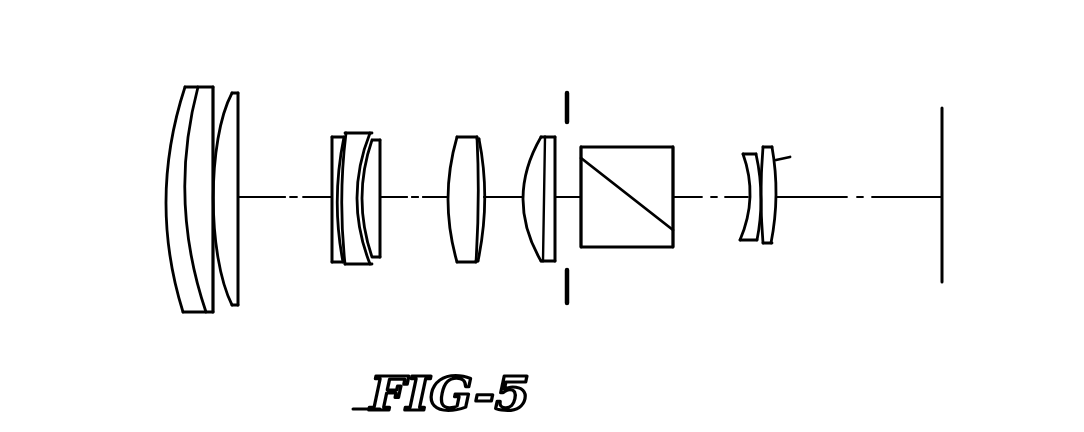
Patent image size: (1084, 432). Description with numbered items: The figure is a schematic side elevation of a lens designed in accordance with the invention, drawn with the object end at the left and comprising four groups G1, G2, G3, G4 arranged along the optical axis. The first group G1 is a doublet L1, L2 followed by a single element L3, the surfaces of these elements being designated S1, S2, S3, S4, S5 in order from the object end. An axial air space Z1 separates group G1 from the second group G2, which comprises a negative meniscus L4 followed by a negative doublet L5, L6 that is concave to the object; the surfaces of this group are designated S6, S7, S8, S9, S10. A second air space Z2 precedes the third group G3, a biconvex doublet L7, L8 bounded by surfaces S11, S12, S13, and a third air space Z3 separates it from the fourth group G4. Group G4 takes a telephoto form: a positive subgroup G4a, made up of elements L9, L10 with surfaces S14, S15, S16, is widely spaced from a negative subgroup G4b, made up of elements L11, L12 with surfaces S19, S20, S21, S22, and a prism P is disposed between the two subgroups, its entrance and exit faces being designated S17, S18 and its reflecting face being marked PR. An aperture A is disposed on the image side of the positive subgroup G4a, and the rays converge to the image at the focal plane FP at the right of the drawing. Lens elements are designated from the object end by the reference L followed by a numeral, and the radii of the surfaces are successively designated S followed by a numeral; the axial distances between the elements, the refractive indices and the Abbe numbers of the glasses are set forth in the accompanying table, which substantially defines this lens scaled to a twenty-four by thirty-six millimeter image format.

The first lens group G1 is at (275, 38).
The second lens group G2 is at (397, 62).
The third lens group G3 is at (513, 62).
The fourth lens group G4 is at (762, 60).
The positive subgroup G4a is at (573, 181).
The negative subgroup G4b is at (766, 114).
The lens element L1 is at (173, 215).
The lens element L2 is at (222, 197).
The lens element L3 is at (245, 187).
The negative meniscus L4 is at (329, 202).
The lens element L5 is at (377, 209).
The lens element L6 is at (395, 202).
The lens element L7 is at (466, 194).
The lens element L8 is at (502, 190).
The lens element L9 is at (526, 208).
The lens element L10 is at (587, 194).
The lens element L11 is at (746, 201).
The lens element L12 is at (796, 187).
The lens surface S1 is at (180, 110).
The lens surface S2 is at (199, 93).
The lens surface S3 is at (226, 96).
The lens surface S4 is at (222, 117).
The lens surface S5 is at (238, 158).
The lens surface S6 is at (330, 152).
The lens surface S7 is at (345, 134).
The lens surface S8 is at (356, 140).
The lens surface S9 is at (374, 148).
The lens surface S10 is at (381, 167).
The lens surface S11 is at (455, 148).
The lens surface S12 is at (480, 135).
The lens surface S13 is at (480, 138).
The lens surface S14 is at (527, 157).
The lens surface S15 is at (528, 143).
The lens surface S16 is at (570, 126).
The lens surface S17 is at (578, 169).
The lens surface S18 is at (686, 145).
The lens surface S19 is at (747, 166).
The lens surface S20 is at (757, 154).
The lens surface S21 is at (763, 148).
The lens surface S22 is at (795, 242).
The first variable air space Z1 is at (264, 186).
The second variable air space Z2 is at (414, 186).
The third variable air space Z3 is at (503, 186).
The aperture stop A is at (572, 97).
The prism P is at (637, 212).
The prism reflecting surface PR is at (635, 250).
The focal plane FP is at (943, 122).